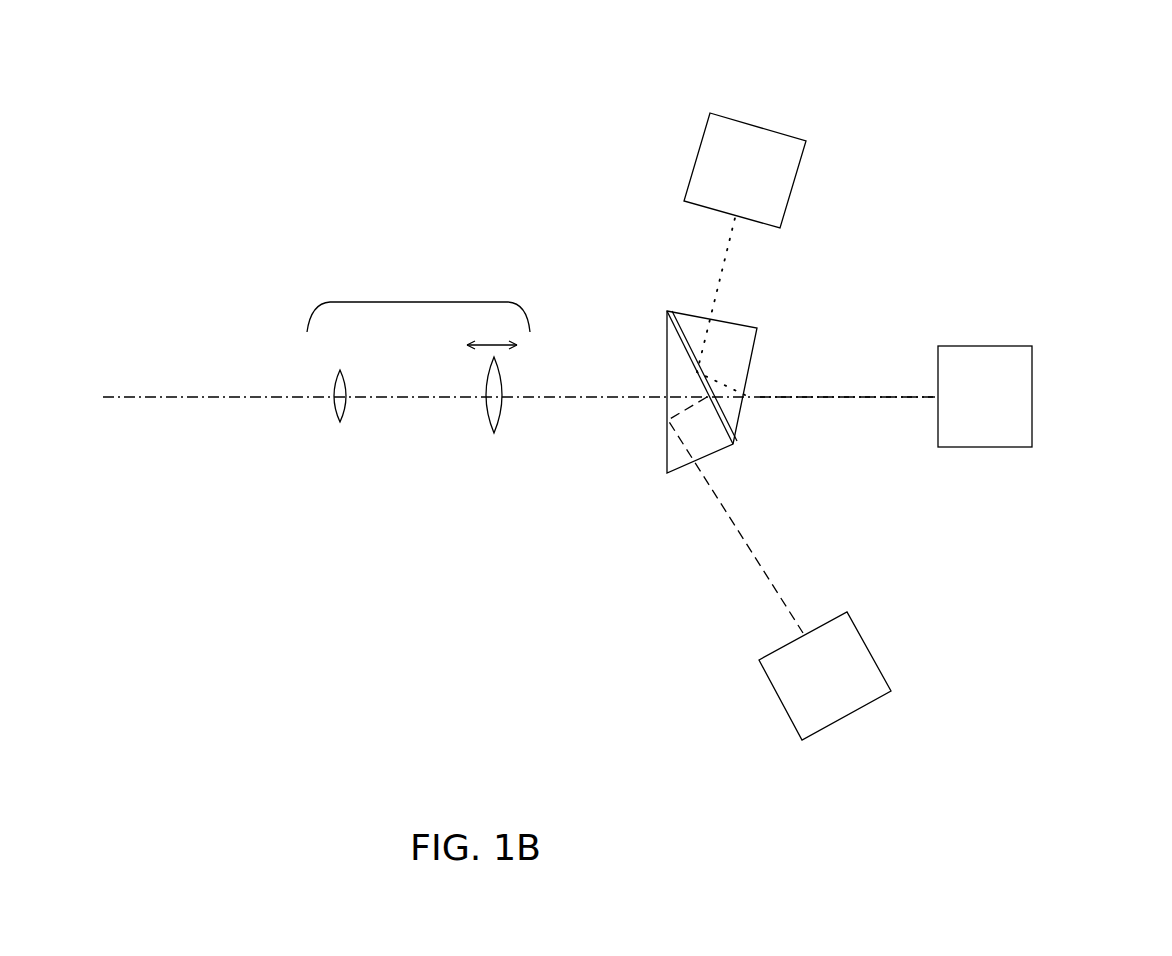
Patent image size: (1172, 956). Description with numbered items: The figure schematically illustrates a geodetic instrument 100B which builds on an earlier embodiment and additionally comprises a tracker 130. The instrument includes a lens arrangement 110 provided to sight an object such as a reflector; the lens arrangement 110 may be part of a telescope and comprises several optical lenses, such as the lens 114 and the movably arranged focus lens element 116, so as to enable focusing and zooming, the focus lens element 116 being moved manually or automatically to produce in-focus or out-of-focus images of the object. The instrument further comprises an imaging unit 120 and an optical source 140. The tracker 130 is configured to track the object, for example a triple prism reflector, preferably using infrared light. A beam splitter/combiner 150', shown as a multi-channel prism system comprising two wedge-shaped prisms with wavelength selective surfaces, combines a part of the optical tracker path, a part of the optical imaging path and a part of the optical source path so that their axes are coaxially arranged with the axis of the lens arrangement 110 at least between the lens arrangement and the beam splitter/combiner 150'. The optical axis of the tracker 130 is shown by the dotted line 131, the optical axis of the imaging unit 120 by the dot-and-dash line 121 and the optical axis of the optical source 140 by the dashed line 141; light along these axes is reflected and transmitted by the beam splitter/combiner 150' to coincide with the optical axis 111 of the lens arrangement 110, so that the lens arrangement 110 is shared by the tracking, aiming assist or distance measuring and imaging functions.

The geodetic instrument 100B is at (410, 88).
The lens arrangement 110 is at (418, 302).
The optical axis of the lens arrangement 111 is at (595, 397).
The lens 114 is at (340, 422).
The focus lens element 116 is at (495, 433).
The imaging unit 120 is at (1033, 393).
The dot-and-dash line 121 is at (833, 397).
The tracker 130 is at (797, 177).
The dotted line 131 is at (720, 275).
The optical source 140 is at (877, 663).
The dashed line 141 is at (740, 540).
The beam splitter/combiner 150' is at (761, 392).